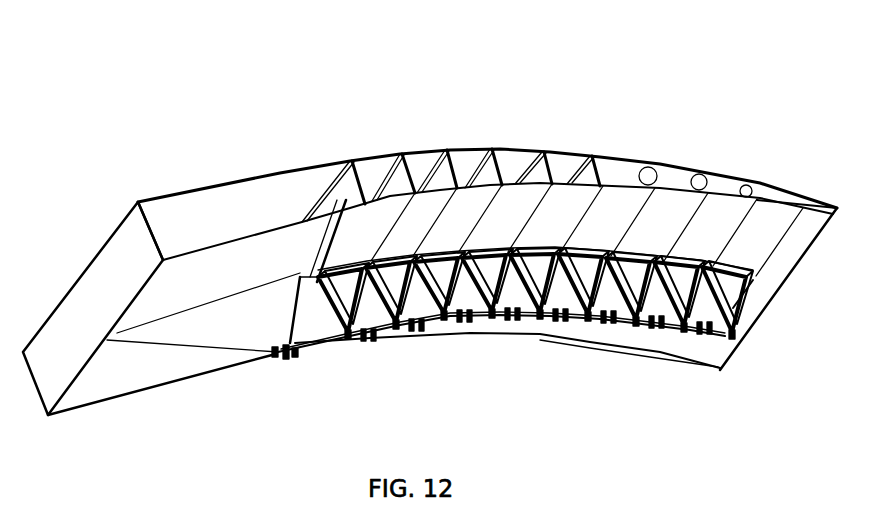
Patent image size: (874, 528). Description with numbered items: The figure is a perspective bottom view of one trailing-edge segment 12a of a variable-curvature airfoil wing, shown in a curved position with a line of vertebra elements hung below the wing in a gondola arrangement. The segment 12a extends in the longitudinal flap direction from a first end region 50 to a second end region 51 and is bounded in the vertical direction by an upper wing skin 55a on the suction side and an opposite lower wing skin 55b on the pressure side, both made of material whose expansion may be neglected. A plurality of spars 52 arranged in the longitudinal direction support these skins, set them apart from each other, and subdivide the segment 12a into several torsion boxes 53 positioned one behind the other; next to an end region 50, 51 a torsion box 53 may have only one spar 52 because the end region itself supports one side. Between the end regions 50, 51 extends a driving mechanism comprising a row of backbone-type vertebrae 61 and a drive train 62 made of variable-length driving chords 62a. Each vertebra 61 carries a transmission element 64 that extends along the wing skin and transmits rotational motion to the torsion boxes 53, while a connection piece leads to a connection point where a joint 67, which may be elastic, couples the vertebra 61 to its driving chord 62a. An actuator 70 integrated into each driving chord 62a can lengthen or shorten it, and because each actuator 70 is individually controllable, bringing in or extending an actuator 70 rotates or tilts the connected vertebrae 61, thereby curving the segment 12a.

The trailing-edge segment 12a is at (488, 85).
The first end region 50 is at (234, 145).
The second end region 51 is at (780, 167).
The spar 52 is at (497, 148).
The torsion box 53 is at (570, 157).
The upper wing skin 55a is at (326, 228).
The lower wing skin 55b is at (351, 160).
The vertebra 61 is at (326, 344).
The drive train 62 is at (658, 349).
The driving chord 62a is at (520, 334).
The transmission element 64 is at (488, 258).
The joint 67 is at (357, 344).
The actuator 70 is at (428, 340).